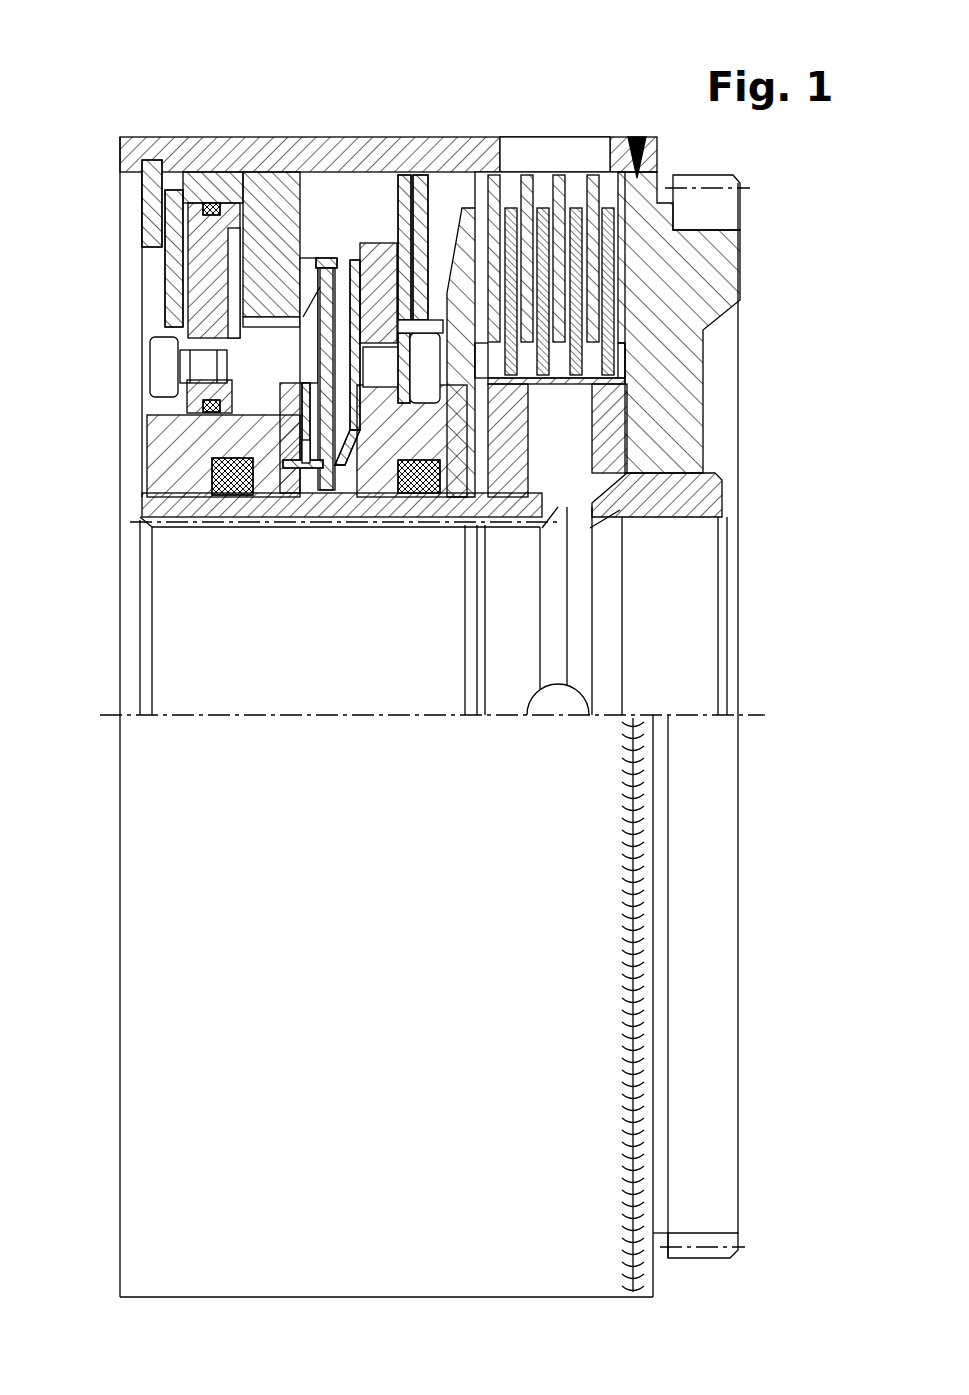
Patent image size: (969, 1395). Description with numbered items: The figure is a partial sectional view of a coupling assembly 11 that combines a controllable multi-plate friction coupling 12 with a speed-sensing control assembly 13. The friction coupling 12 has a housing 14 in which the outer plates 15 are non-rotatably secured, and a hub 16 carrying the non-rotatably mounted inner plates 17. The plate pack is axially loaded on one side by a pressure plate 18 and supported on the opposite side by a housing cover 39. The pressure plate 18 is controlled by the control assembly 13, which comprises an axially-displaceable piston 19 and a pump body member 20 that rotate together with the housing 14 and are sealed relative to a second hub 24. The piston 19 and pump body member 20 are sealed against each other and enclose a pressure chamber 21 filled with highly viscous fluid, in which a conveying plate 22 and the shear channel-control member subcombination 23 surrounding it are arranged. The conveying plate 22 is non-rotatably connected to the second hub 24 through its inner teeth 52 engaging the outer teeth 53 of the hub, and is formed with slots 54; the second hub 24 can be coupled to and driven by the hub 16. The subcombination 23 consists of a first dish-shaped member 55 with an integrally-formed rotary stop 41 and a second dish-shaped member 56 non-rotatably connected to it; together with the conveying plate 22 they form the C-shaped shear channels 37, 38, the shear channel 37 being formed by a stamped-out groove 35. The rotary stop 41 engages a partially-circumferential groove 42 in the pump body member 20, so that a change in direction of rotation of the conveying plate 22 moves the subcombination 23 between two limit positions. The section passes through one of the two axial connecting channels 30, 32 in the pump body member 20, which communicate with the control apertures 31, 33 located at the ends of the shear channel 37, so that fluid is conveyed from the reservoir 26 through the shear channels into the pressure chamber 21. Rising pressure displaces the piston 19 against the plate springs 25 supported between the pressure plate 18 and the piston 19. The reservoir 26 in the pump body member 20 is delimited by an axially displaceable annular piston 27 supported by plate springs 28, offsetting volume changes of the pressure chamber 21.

The coupling assembly 11 is at (775, 232).
The multi-plate friction coupling 12 is at (550, 135).
The speed-sensing control assembly 13 is at (204, 102).
The housing 14 is at (620, 150).
The outer plates 15 is at (592, 177).
The hub 16 is at (608, 445).
The inner plates 17 is at (607, 367).
The pressure plate 18 is at (472, 225).
The piston 19 is at (418, 220).
The pump body member 20 is at (235, 190).
The pressure chamber 21 is at (312, 262).
The conveying plate 22 is at (296, 280).
The shear channel-control member subcombination 23 is at (296, 445).
The second hub 24 is at (167, 503).
The plate springs 25 is at (448, 200).
The reservoir 26 is at (258, 235).
The annular piston 27 is at (203, 288).
The plate springs 28 is at (150, 190).
The axial connecting channel 30 is at (145, 367).
The axial connecting channel 32 is at (263, 360).
The control aperture 31 is at (168, 342).
The control aperture 33 is at (307, 337).
The stamped-out groove 35 is at (372, 400).
The shear channel 37 is at (287, 287).
The shear channel 38 is at (400, 230).
The housing cover 39 is at (673, 277).
The rotary stop 41 is at (297, 462).
The partially-circumferential groove 42 is at (301, 478).
The inner teeth 52 is at (322, 492).
The outer teeth 53 is at (334, 488).
The slots 54 is at (307, 472).
The first dish-shaped member 55 is at (325, 245).
The second dish-shaped member 56 is at (345, 250).